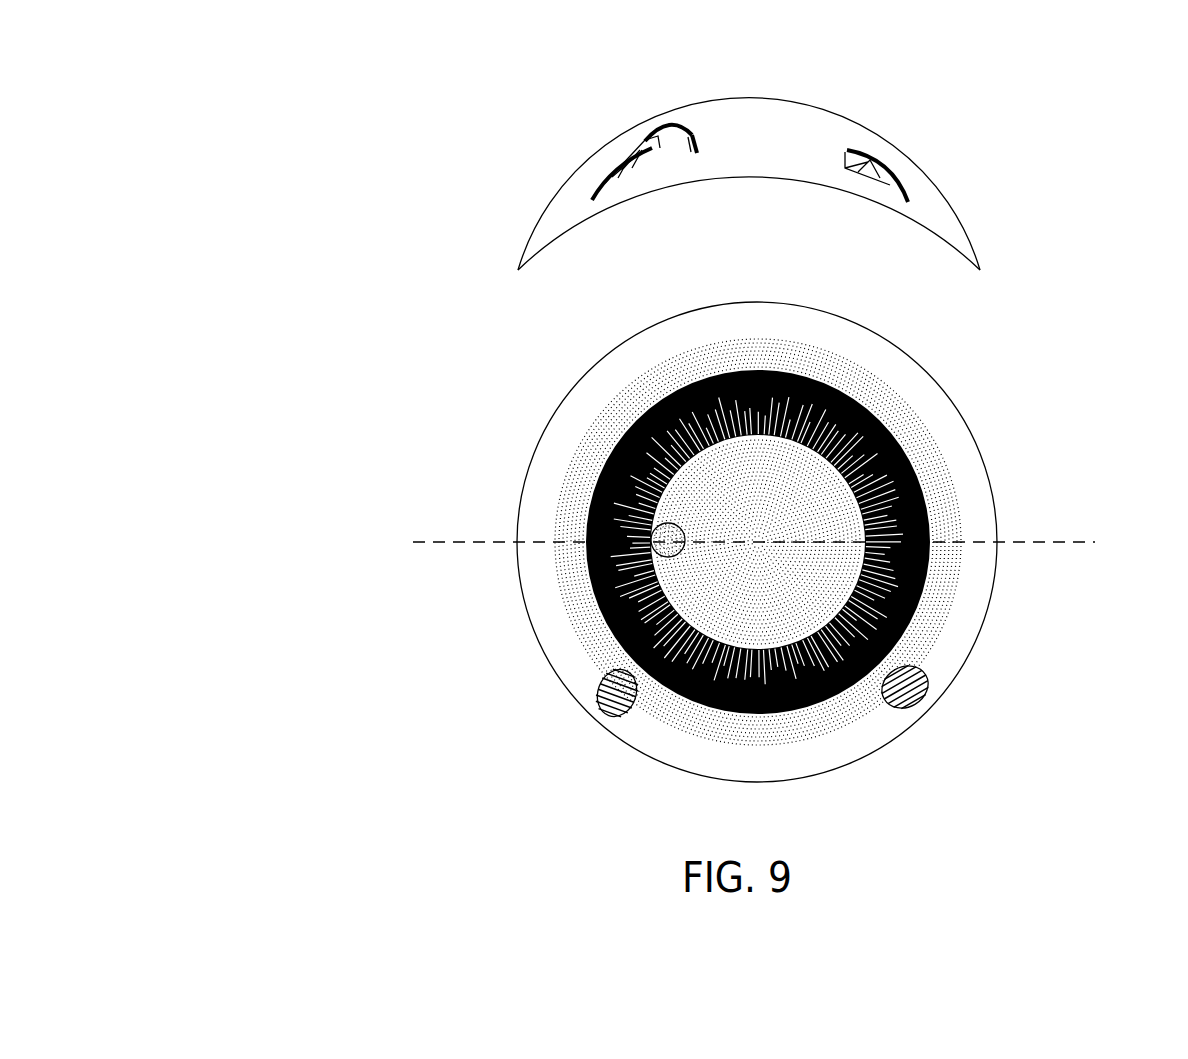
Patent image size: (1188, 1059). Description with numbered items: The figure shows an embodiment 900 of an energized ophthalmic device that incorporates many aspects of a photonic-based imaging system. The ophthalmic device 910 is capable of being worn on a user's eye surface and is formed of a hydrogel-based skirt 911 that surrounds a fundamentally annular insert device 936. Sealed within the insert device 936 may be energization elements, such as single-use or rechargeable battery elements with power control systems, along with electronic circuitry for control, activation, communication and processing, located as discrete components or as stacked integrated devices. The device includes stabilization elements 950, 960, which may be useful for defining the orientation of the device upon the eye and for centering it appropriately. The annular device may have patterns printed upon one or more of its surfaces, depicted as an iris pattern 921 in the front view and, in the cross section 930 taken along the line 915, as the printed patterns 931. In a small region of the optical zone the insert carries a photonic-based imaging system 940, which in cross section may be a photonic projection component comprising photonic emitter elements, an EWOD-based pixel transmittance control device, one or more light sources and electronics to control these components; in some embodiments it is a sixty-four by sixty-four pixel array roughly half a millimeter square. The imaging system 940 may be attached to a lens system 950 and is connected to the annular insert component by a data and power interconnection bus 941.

The energized ophthalmic device embodiment 900 is at (332, 142).
The ophthalmic device 910 is at (1077, 475).
The hydrogel-based skirt 911 is at (552, 607).
The line 915 is at (390, 549).
The iris pattern 921 is at (860, 474).
The cross section 930 is at (1077, 185).
The printed patterns 931 is at (607, 175).
The annular insert device 936 is at (857, 167).
The photonic-based imaging system 940 is at (669, 130).
The data and power interconnection bus 941 is at (631, 143).
The stabilization element / lens system 950 is at (687, 136).
The stabilization element 960 is at (920, 700).